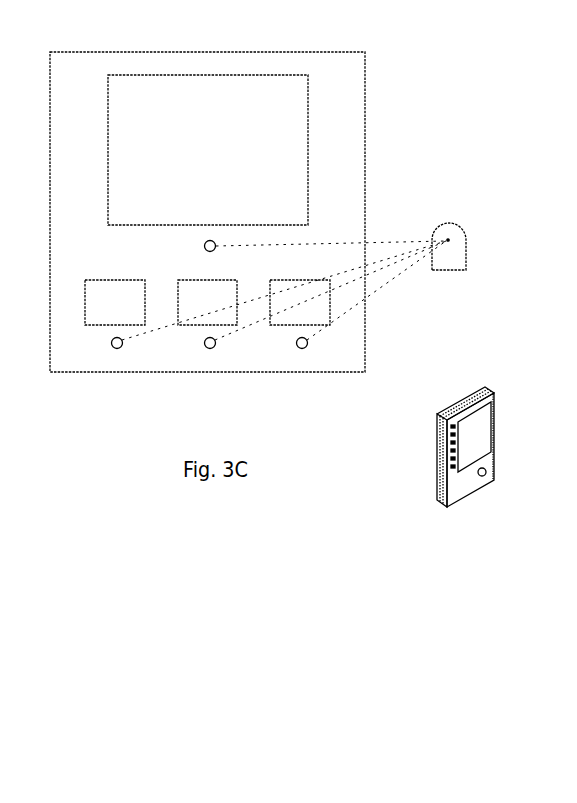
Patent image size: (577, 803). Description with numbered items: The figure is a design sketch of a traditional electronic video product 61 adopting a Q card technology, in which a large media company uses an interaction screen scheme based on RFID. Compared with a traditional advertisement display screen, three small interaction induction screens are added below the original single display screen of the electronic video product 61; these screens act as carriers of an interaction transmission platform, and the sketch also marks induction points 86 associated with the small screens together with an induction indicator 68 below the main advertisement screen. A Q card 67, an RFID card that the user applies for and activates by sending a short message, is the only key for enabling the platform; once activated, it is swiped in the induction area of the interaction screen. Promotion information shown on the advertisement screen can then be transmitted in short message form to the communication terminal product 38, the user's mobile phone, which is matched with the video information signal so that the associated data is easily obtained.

The electronic video product 61 is at (323, 155).
The primary interaction indicator 68 is at (202, 249).
The selectable advertisement indicator 86 is at (110, 346).
The gaze/pointer sensor 67 is at (476, 254).
The communication terminal product 38 is at (518, 462).